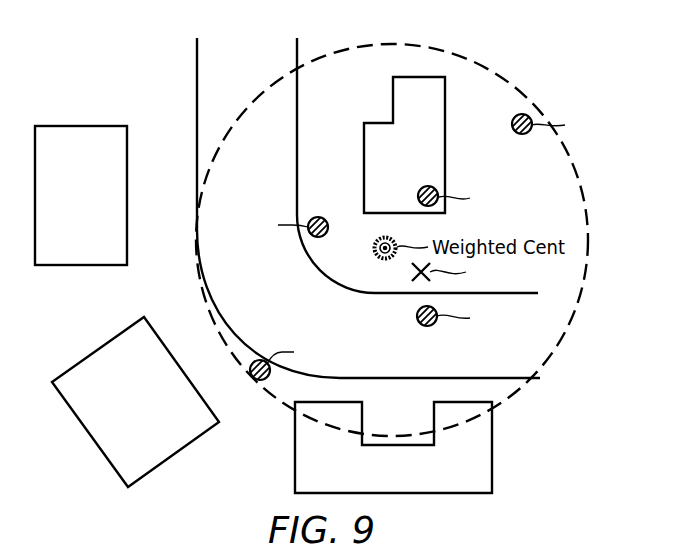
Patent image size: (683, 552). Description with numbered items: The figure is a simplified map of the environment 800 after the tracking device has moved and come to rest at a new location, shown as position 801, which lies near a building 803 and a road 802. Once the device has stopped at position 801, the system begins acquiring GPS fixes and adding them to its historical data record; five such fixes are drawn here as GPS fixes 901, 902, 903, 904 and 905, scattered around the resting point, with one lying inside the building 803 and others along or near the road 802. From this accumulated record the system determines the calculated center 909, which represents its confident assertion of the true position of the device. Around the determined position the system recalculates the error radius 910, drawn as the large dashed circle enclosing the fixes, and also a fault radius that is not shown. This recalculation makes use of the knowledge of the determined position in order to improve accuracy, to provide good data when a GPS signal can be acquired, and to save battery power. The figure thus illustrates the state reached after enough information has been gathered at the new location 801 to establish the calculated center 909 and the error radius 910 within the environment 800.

The environment 800 is at (593, 392).
The new location 801 is at (413, 271).
The road 802 is at (313, 322).
The building 803 is at (404, 145).
The GPS fix 901 is at (268, 377).
The GPS fix 902 is at (417, 316).
The GPS fix 903 is at (530, 116).
The GPS fix 904 is at (316, 238).
The GPS fix 905 is at (430, 187).
The calculated center 909 is at (373, 247).
The error radius 910 is at (505, 403).